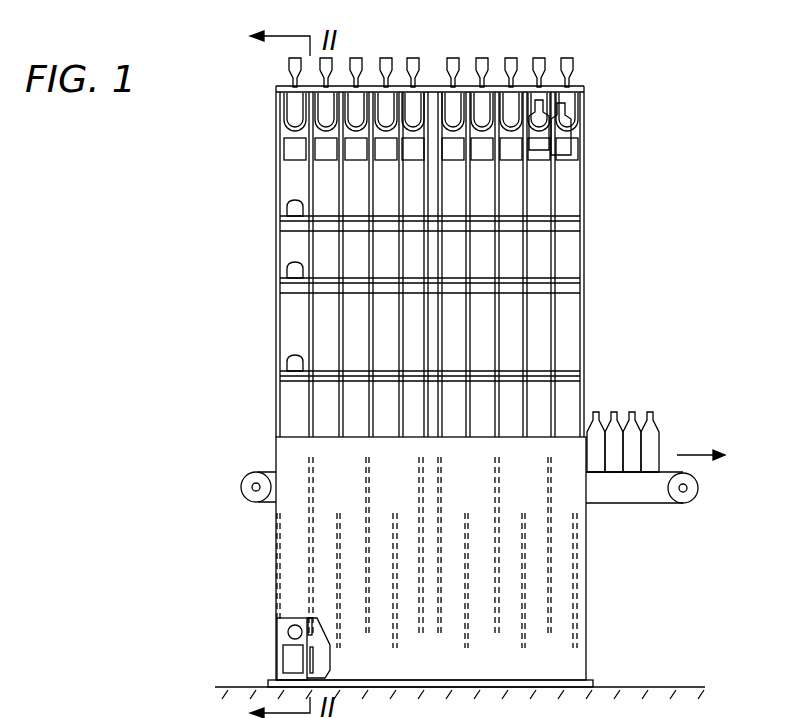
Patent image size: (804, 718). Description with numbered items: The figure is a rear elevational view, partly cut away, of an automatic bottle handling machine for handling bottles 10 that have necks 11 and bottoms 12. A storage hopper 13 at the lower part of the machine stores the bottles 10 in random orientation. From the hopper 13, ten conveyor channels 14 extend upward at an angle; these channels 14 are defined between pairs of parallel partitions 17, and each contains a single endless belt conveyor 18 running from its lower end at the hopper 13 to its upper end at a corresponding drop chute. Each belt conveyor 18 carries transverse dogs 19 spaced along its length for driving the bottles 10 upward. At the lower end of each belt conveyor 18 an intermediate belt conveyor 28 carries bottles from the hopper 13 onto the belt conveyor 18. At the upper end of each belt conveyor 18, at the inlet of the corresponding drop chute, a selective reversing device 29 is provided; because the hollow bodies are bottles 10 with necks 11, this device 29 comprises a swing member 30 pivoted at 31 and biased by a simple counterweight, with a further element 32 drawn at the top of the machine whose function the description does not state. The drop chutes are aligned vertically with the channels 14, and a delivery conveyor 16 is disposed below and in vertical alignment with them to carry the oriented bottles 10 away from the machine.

The bottle 10 is at (286, 197).
The neck 11 is at (656, 418).
The bottom 12 is at (650, 462).
The storage hopper 13 is at (592, 606).
The conveyor channel 14 is at (567, 258).
The delivery conveyor 16 is at (643, 504).
The partition 17 is at (548, 213).
The endless belt conveyor 18 is at (560, 317).
The transverse dog 19 is at (355, 218).
The intermediate belt conveyor 28 is at (284, 657).
The selective reversing device 29 is at (519, 82).
The swing member 30 is at (368, 152).
The pivot 31 is at (298, 90).
The filling nozzle 32 is at (352, 63).